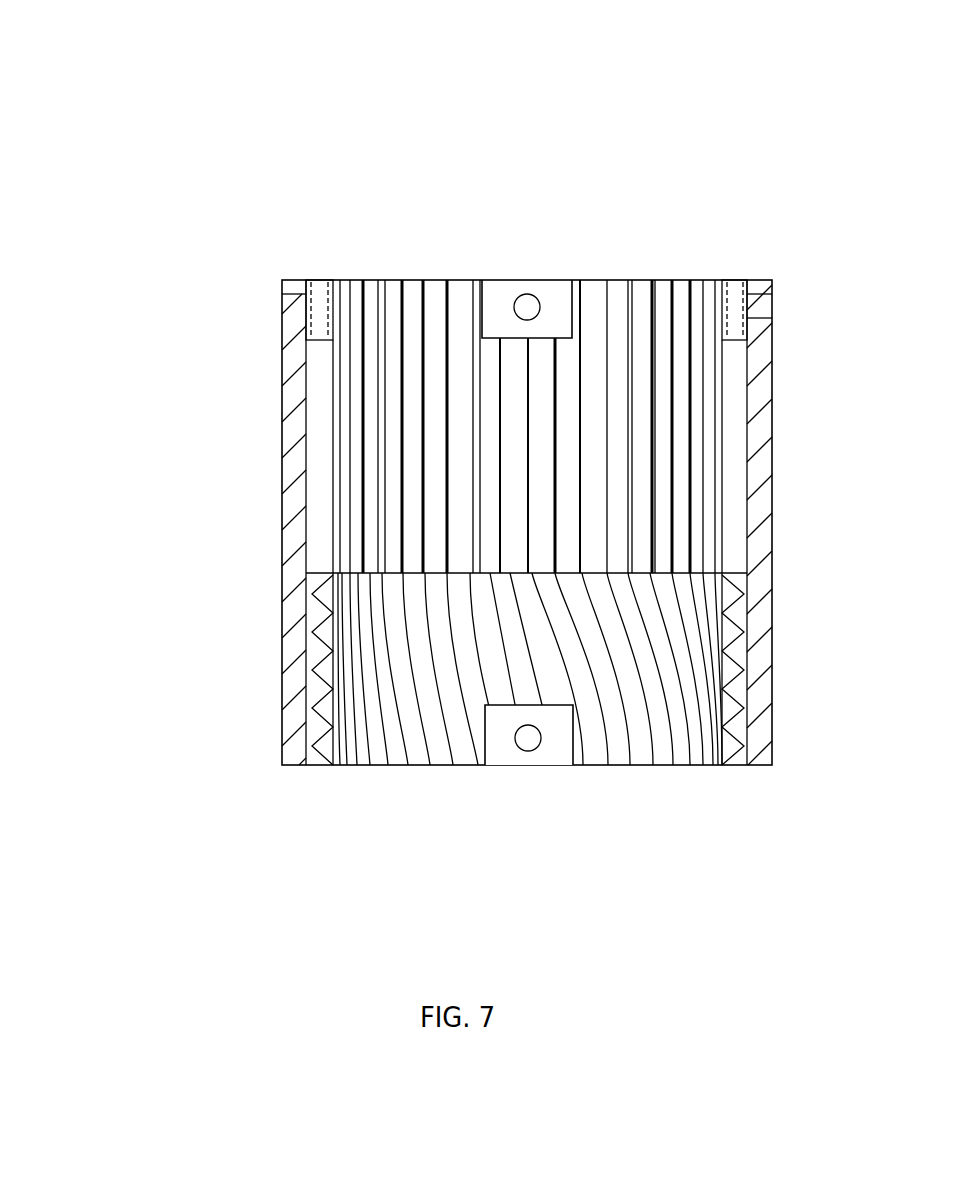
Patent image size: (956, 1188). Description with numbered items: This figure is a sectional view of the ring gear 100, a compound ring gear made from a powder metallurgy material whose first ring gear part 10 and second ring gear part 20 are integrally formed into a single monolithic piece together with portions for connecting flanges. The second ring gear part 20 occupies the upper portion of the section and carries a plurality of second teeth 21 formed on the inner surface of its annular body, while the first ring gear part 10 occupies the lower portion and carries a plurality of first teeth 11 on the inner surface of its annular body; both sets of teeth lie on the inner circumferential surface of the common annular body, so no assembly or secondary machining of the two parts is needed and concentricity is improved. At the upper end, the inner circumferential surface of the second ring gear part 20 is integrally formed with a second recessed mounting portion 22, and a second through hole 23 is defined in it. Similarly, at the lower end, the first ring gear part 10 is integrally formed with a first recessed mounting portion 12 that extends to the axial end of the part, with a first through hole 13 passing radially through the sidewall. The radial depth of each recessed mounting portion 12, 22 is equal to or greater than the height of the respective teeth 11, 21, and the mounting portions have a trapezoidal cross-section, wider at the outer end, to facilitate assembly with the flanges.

The ring gear 100 is at (537, 112).
The second ring gear part 20 is at (300, 373).
The second teeth 21 is at (398, 345).
The second recessed mounting portion 22 is at (557, 320).
The second through hole 23 is at (525, 294).
The first ring gear part 10 is at (305, 671).
The first teeth 11 is at (383, 695).
The first recessed mounting portion 12 is at (553, 750).
The first through hole 13 is at (529, 752).